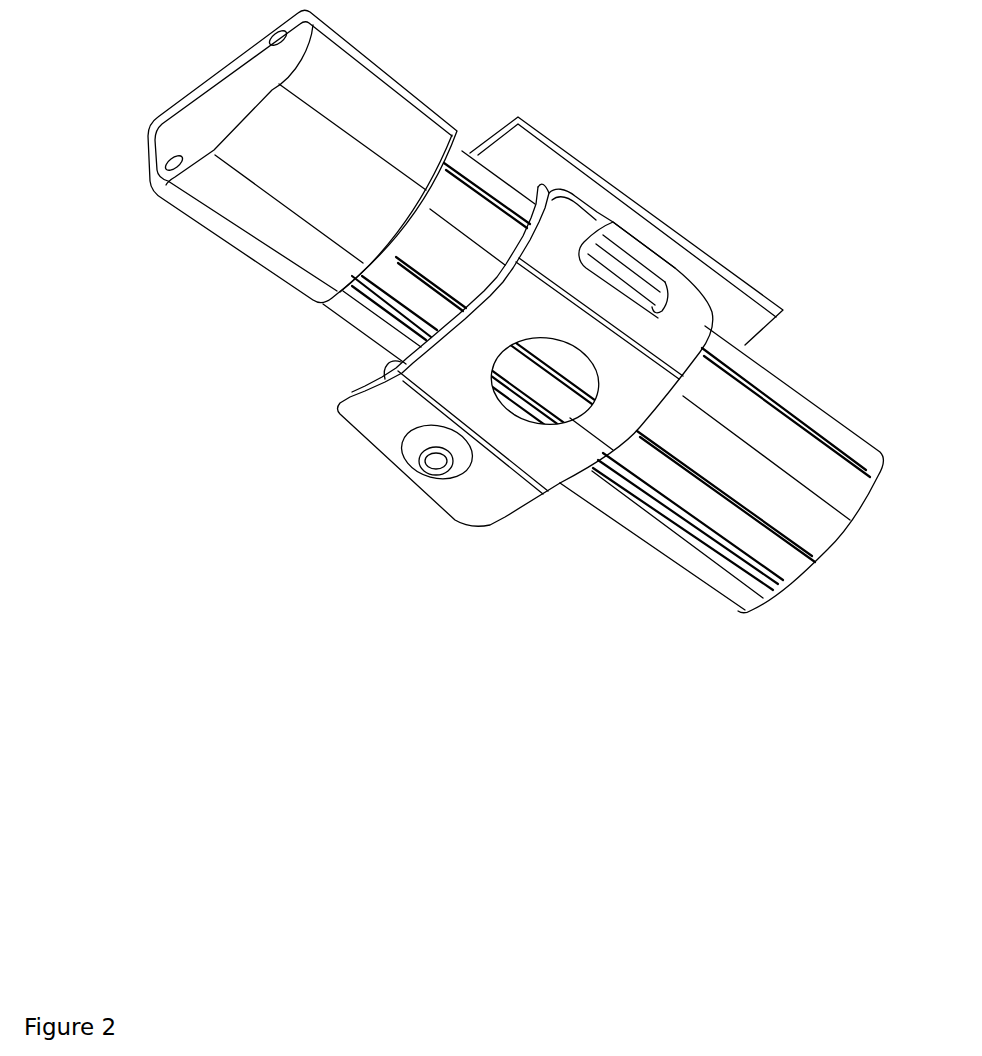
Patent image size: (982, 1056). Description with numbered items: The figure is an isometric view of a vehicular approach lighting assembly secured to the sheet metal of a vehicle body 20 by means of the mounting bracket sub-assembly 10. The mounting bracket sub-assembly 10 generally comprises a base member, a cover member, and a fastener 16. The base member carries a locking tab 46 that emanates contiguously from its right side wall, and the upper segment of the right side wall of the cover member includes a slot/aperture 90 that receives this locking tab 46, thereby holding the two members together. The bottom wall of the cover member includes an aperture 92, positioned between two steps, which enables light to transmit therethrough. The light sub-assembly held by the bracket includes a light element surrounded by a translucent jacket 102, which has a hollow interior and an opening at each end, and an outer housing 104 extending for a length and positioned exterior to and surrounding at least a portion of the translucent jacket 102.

The mounting bracket sub-assembly 10 is at (348, 547).
The vehicle body 20 is at (518, 143).
The locking tab 46 is at (639, 238).
The slot/aperture 90 is at (660, 311).
The fastener 16 is at (463, 458).
The aperture 92 is at (552, 395).
The translucent jacket 102 is at (793, 557).
The outer housing 104 is at (827, 515).